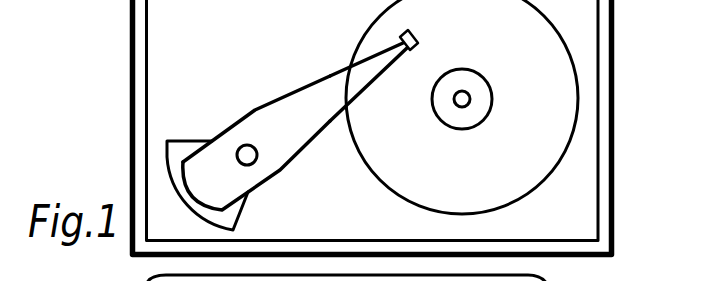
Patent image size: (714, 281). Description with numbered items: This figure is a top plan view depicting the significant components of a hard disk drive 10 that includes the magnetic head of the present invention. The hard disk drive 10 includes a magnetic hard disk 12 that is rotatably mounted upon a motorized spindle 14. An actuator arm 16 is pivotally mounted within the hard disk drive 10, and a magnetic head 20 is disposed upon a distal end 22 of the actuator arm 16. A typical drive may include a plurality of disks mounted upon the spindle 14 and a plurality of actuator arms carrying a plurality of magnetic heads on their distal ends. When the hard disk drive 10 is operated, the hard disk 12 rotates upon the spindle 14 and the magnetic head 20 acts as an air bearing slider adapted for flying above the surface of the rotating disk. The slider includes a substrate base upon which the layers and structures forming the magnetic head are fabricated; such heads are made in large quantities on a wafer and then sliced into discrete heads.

The hard disk drive 10 is at (614, 66).
The magnetic hard disk 12 is at (470, 193).
The motorized spindle 14 is at (488, 104).
The actuator arm 16 is at (292, 103).
The magnetic head 20 is at (416, 38).
The distal end 22 is at (388, 63).